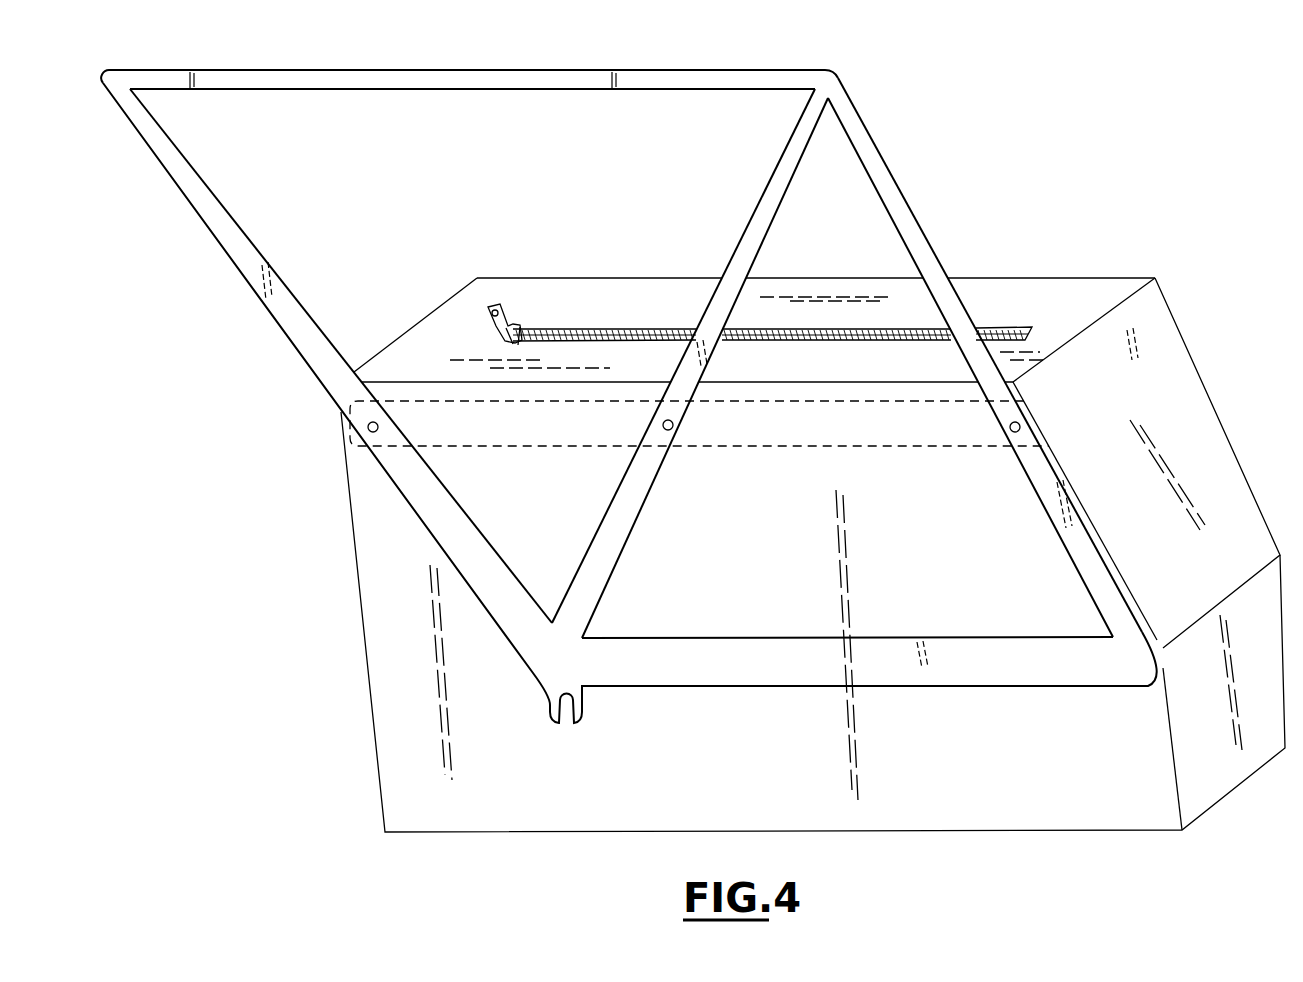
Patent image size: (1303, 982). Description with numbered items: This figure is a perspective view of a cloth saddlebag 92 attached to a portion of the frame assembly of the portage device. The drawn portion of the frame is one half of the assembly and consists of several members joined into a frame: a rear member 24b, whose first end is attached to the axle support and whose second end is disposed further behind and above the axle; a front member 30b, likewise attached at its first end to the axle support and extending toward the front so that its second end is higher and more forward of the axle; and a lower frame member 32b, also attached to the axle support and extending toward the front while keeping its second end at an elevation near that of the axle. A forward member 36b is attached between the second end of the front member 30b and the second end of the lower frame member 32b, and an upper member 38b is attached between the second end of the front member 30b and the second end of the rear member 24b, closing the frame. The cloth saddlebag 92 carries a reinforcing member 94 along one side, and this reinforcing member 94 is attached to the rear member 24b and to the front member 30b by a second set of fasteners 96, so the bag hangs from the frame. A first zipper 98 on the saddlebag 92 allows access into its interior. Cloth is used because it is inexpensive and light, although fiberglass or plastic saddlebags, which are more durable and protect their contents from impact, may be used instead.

The rear member 24b is at (425, 505).
The front member 30b is at (630, 512).
The lower frame member 32b is at (747, 668).
The forward member 36b is at (905, 193).
The upper member 38b is at (473, 77).
The cloth saddlebag 92 is at (1190, 449).
The reinforcing member 94 is at (495, 430).
The second set of fasteners 96 is at (367, 431).
The first zipper 98 is at (543, 328).